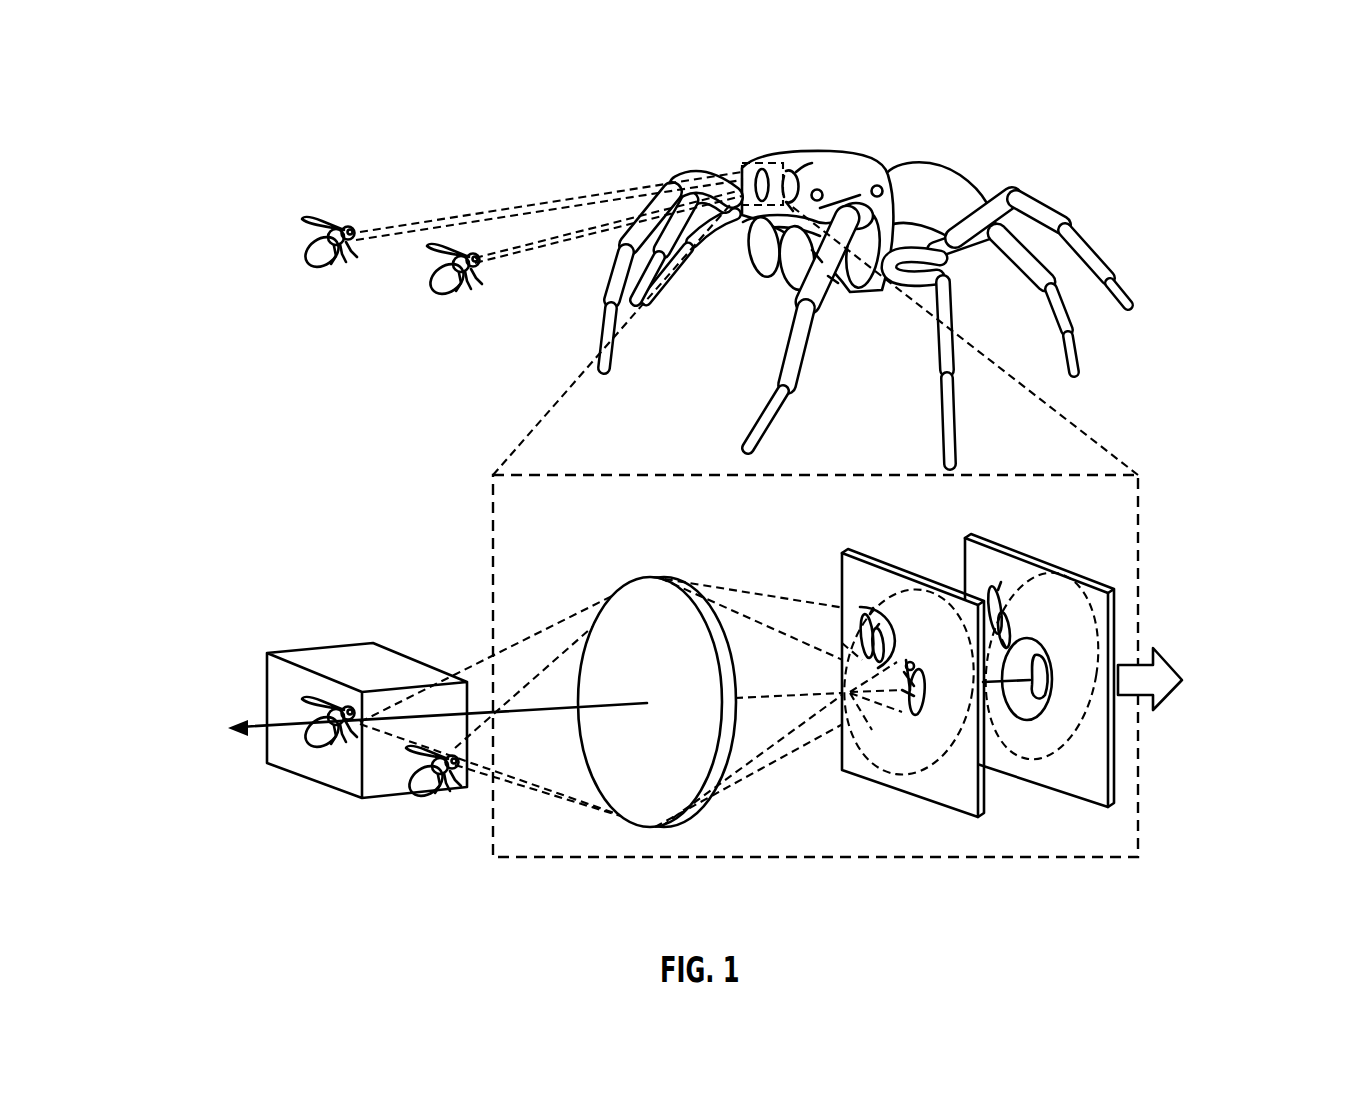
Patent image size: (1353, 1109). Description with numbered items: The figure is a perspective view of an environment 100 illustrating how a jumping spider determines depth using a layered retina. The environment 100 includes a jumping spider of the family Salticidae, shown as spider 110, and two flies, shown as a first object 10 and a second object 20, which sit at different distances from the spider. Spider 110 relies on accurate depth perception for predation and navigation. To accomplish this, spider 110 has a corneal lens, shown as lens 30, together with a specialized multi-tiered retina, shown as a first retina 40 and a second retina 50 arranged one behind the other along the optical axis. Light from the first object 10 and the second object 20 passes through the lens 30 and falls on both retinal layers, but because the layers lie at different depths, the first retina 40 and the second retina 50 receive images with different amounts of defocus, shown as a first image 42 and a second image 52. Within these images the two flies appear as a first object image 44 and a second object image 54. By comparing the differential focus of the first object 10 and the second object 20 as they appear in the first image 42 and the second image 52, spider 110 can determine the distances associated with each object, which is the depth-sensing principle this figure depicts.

The environment 100 is at (265, 96).
The spider 110 is at (924, 176).
The first object 10 is at (306, 268).
The second object 20 is at (432, 296).
The lens 30 is at (653, 796).
The first retina 40 is at (955, 793).
The first image 42 is at (892, 755).
The first object image 44 is at (880, 612).
The second retina 50 is at (1087, 794).
The second image 52 is at (1062, 605).
The second object image 54 is at (1010, 652).